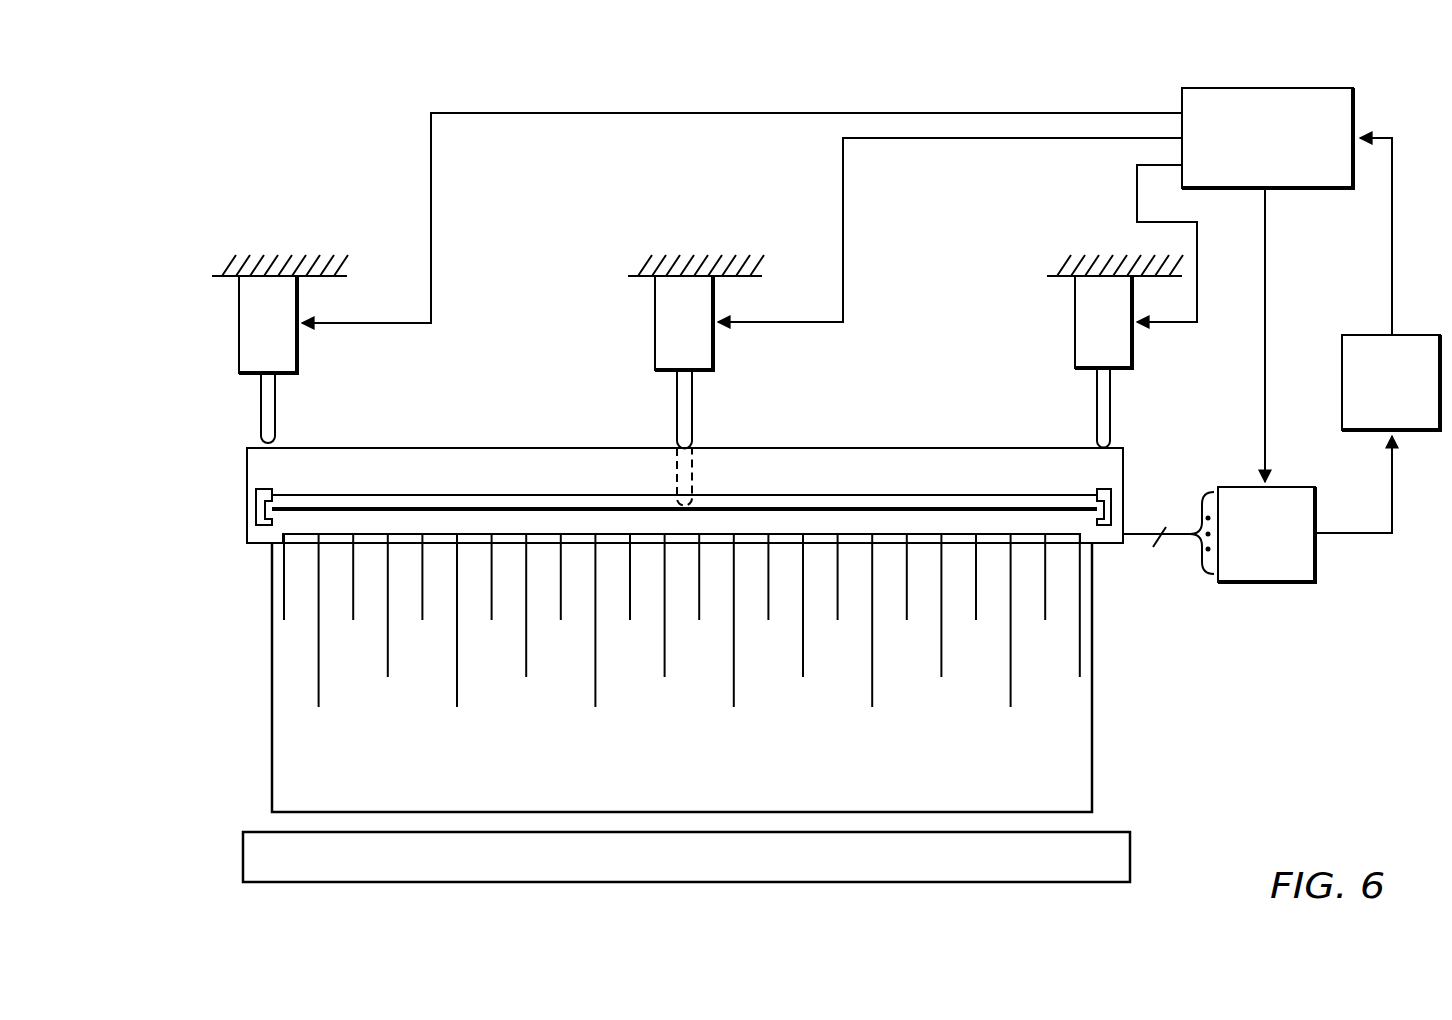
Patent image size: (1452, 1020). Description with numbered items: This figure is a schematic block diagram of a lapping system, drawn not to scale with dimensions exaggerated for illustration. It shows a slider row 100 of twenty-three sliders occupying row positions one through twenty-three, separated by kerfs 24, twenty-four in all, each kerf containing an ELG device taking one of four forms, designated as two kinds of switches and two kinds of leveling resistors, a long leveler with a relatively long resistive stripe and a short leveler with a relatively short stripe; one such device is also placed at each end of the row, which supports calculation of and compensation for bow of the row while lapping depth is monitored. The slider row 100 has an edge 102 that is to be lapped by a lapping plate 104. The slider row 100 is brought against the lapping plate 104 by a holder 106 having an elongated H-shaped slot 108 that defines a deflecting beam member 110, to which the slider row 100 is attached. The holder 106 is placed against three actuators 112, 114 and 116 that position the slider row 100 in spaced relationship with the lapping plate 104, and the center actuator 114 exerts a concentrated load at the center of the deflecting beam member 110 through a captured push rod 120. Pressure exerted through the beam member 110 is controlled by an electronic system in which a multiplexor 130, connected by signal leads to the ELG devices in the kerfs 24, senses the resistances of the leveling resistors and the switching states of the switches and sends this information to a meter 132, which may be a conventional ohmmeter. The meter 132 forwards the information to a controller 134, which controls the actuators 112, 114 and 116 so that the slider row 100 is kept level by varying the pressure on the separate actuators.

The slider row 100 is at (1135, 720).
The edge 102 is at (1058, 813).
The lapping plate 104 is at (1130, 845).
The holder 106 is at (848, 445).
The elongated H-shaped slot 108 is at (325, 503).
The deflecting beam member 110 is at (450, 512).
The actuator 112 is at (297, 353).
The actuator 114 is at (713, 350).
The actuator 116 is at (1075, 349).
The captured push rod 120 is at (692, 467).
The kerfs 24 is at (1156, 554).
The multiplexor 130 is at (1270, 583).
The meter 132 is at (1408, 335).
The controller 134 is at (1265, 88).